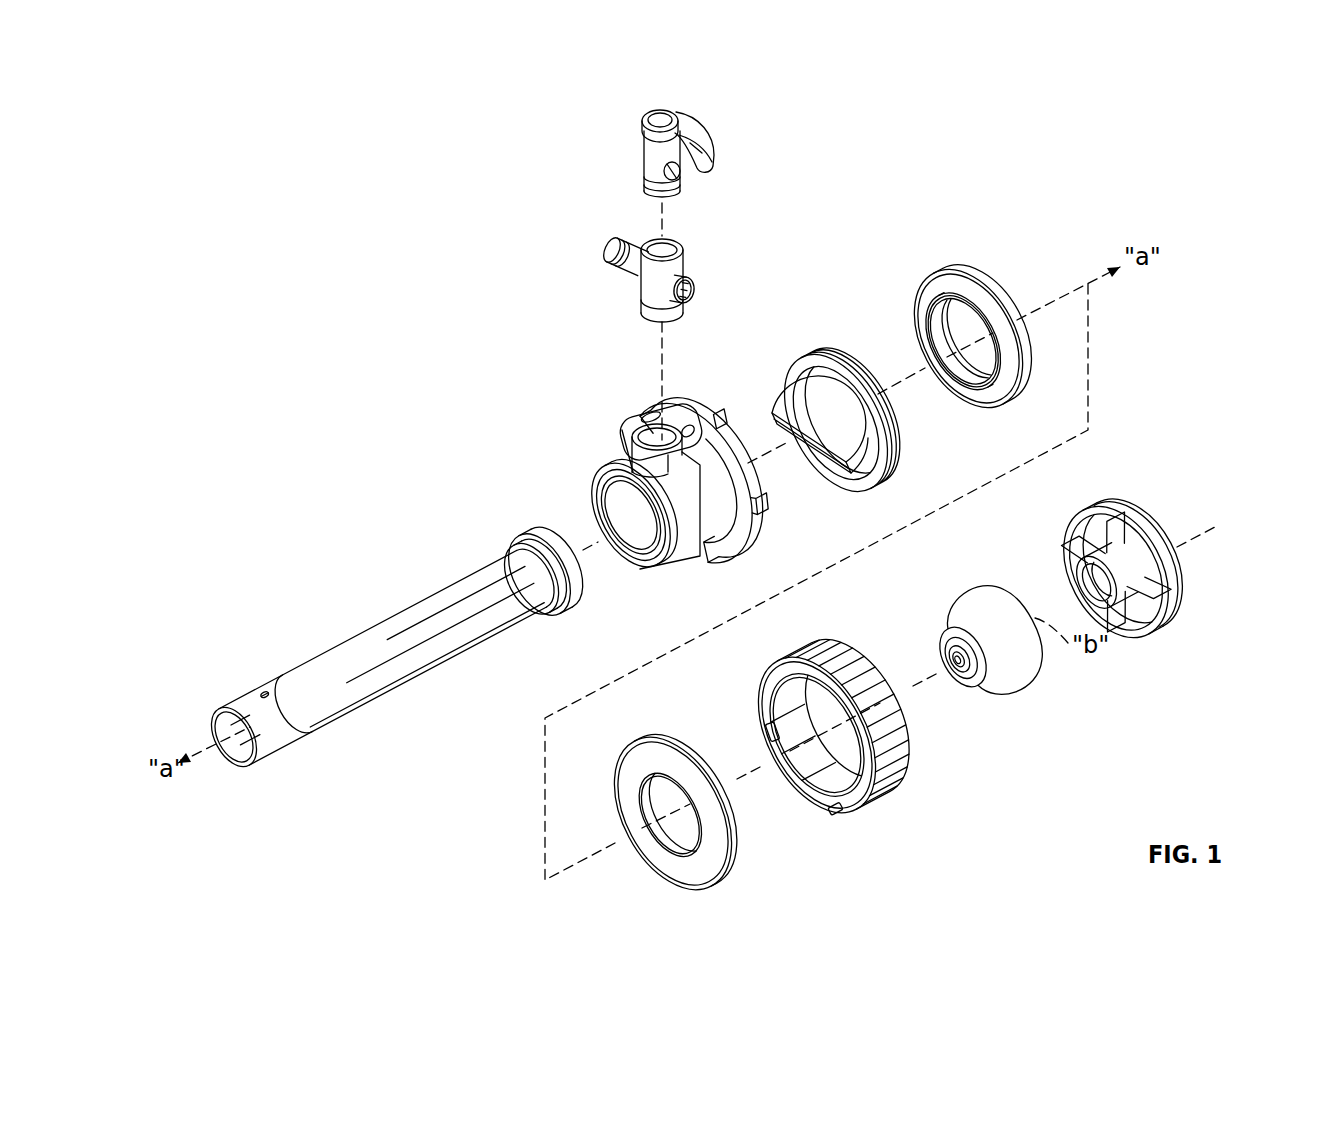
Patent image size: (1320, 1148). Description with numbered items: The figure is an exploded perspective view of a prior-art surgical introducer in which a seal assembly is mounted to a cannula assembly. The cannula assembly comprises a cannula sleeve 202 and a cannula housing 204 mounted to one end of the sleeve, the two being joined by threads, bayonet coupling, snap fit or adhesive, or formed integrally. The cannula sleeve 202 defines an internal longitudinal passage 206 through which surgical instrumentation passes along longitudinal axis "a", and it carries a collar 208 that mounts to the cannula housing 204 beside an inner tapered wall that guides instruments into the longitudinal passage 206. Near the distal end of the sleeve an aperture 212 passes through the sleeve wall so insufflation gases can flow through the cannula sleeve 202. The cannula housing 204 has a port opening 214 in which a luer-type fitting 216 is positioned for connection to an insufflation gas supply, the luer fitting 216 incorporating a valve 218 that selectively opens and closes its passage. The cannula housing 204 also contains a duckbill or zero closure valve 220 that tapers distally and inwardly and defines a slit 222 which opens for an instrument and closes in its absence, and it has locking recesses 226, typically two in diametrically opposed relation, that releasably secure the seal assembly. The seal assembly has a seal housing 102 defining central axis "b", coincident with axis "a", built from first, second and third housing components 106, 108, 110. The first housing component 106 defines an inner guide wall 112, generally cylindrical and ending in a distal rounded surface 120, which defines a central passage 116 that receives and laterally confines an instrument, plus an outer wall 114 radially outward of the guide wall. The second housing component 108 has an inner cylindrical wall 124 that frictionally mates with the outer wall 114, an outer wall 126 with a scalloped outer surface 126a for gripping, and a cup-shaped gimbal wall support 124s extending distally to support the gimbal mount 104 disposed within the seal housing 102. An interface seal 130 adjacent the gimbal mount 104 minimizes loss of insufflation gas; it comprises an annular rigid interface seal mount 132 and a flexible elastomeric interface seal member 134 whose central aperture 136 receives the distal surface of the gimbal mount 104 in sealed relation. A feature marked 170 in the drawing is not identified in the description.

The seal housing 102 is at (1124, 712).
The gimbal mount 104 is at (1017, 702).
The first housing component 106 is at (1143, 528).
The second housing component 108 is at (917, 760).
The third housing component 110 is at (970, 272).
The inner guide wall 112 is at (1147, 573).
The outer wall 114 is at (1100, 507).
The central passage 116 is at (1078, 578).
The distal arcuate or rounded surface 120 is at (1165, 625).
The inner cylindrical wall 124 is at (850, 760).
The gimbal wall support 124s is at (800, 708).
The outer wall 126 is at (760, 678).
The scalloped outer surface 126a is at (903, 787).
The interface seal 130 is at (738, 870).
The interface seal mount 132 is at (657, 738).
The interface seal member 134 is at (628, 780).
The central aperture 136 is at (654, 800).
The slot 170 is at (765, 733).
The cannula sleeve 202 is at (430, 667).
The cannula housing 204 is at (690, 537).
The internal longitudinal passage 206 is at (217, 730).
The collar 208 is at (520, 540).
The aperture 212 is at (265, 691).
The port opening 214 is at (661, 417).
The luer-type fitting 216 is at (646, 296).
The valve 218 is at (641, 128).
The duckbill or zero closure valve 220 is at (808, 358).
The slit 222 is at (826, 450).
The locking recess 226 is at (693, 436).